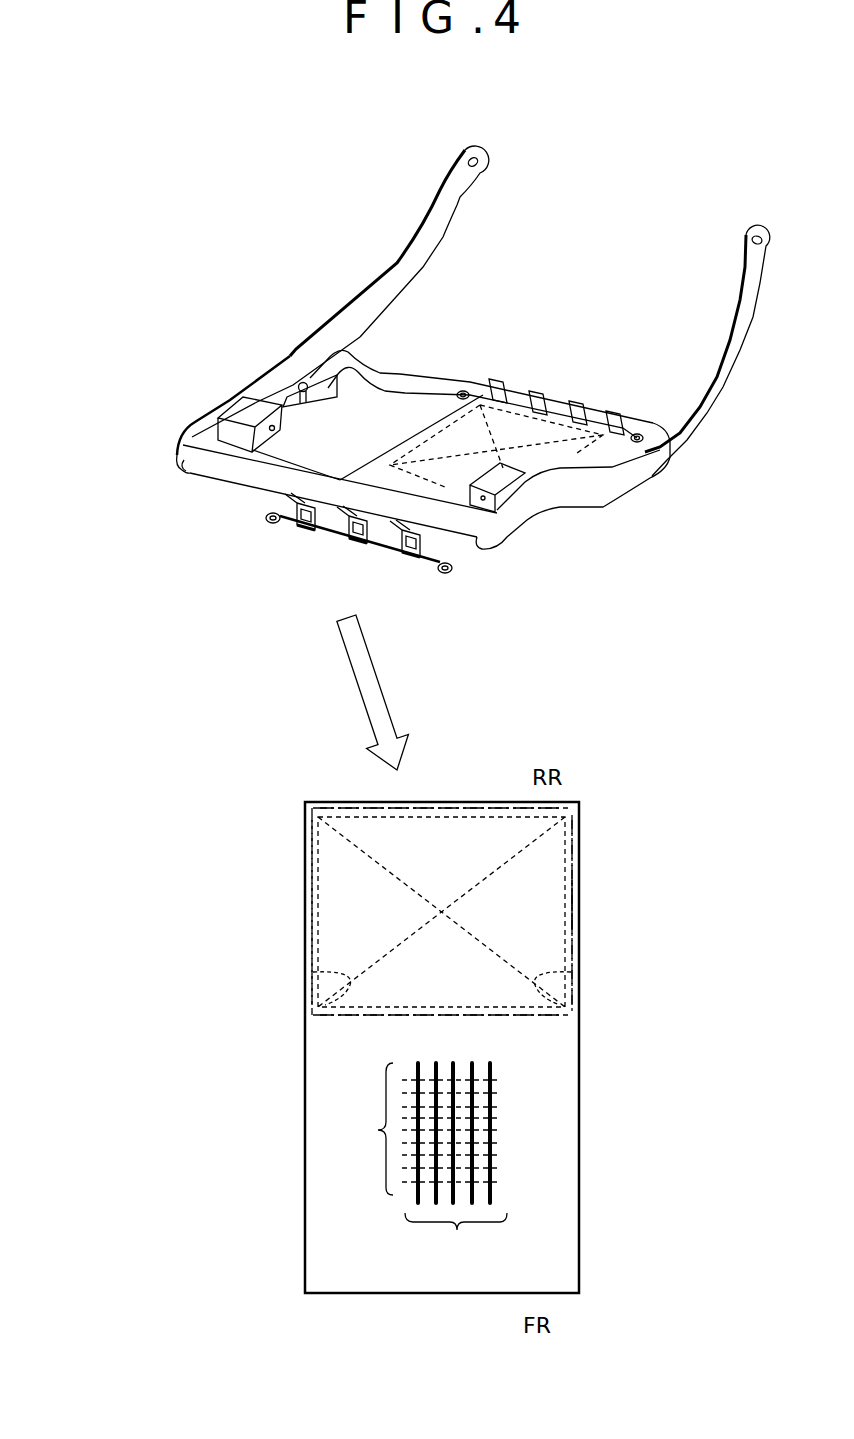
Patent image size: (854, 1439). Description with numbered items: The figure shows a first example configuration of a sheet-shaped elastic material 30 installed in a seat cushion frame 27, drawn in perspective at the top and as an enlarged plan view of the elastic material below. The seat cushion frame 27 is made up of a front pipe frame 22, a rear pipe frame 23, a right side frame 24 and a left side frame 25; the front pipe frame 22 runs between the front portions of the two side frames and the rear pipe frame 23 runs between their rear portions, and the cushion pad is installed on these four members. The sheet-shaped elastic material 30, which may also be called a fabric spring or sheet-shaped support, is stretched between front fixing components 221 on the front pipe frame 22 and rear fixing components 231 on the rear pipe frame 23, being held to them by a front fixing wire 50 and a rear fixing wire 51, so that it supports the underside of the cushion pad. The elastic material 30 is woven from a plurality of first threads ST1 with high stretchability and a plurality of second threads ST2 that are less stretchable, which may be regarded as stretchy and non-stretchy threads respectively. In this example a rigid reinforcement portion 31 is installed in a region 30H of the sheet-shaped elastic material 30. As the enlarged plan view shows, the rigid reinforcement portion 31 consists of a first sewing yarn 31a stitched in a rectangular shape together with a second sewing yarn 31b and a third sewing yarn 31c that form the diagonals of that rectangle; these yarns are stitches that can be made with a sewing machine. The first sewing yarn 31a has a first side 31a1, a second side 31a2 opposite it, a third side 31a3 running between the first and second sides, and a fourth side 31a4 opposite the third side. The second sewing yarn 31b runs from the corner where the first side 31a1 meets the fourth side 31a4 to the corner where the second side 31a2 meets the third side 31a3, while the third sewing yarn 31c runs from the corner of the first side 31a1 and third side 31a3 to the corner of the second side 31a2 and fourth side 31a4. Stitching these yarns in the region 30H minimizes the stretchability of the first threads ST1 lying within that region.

The seat cushion frame 27 is at (405, 122).
The front pipe frame 22 is at (180, 467).
The rear pipe frame 23 is at (425, 374).
The right side frame 24 is at (402, 282).
The left side frame 25 is at (742, 312).
The rigid reinforcement portion 31 is at (430, 437).
The rear fixing wire 51 is at (465, 392).
The rear fixing components 231 is at (496, 380).
The front fixing components 221 is at (300, 528).
The front fixing wire 50 is at (265, 519).
The sheet-shaped elastic material 30 is at (380, 545).
The first sewing yarn 31a is at (308, 893).
The first side 31a1 is at (308, 938).
The second side 31a2 is at (575, 863).
The third side 31a3 is at (492, 806).
The fourth side 31a4 is at (355, 1010).
The second sewing yarn 31b is at (308, 974).
The third sewing yarn 31c is at (578, 975).
The region 30H is at (575, 905).
The first threads ST1 is at (456, 1166).
The second threads ST2 is at (410, 1129).